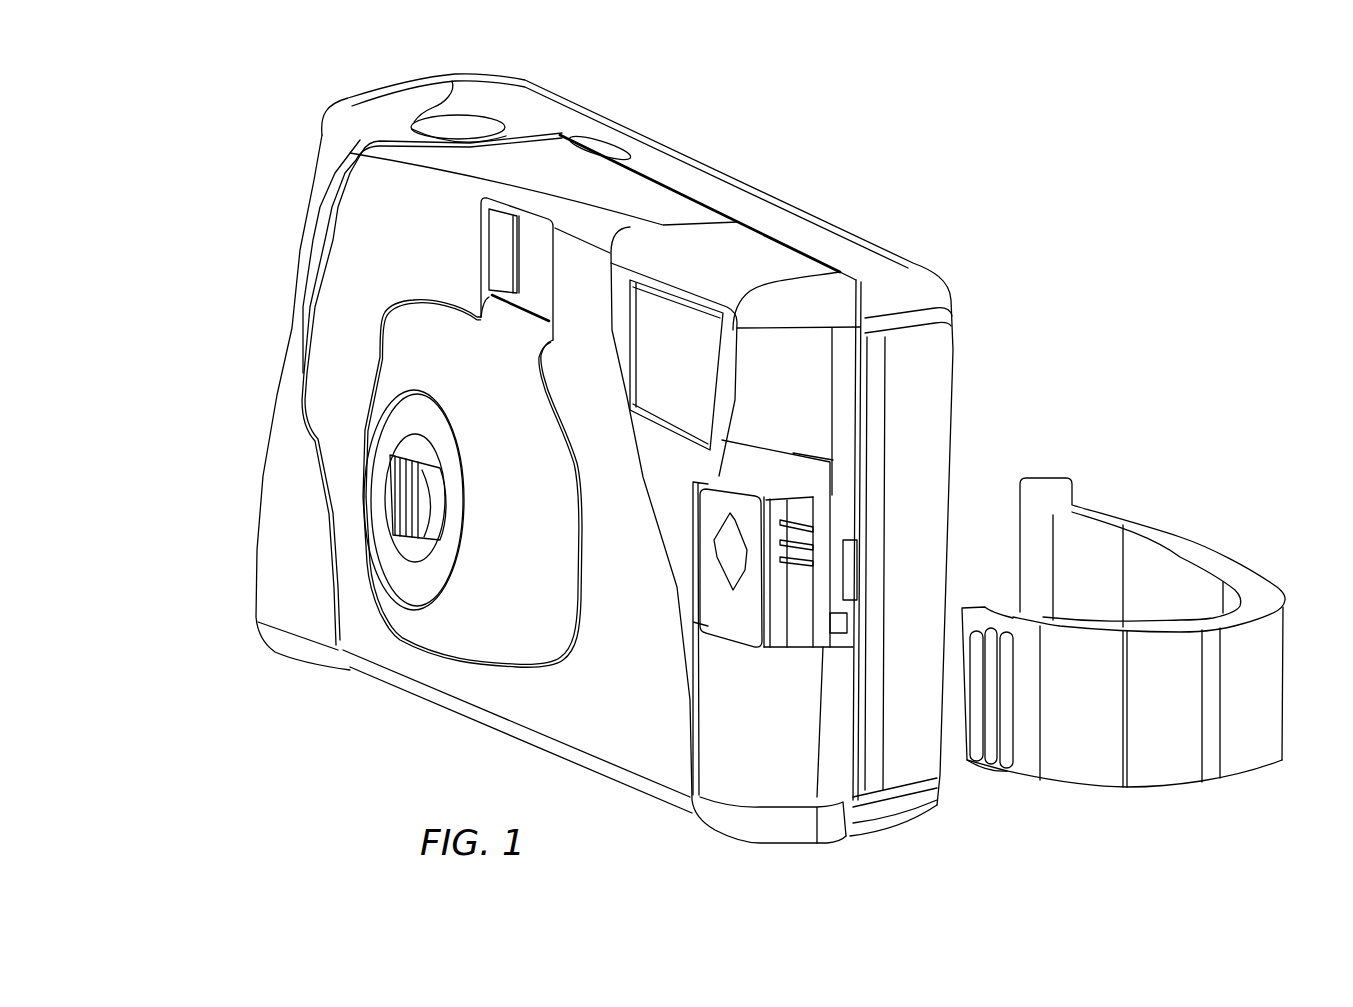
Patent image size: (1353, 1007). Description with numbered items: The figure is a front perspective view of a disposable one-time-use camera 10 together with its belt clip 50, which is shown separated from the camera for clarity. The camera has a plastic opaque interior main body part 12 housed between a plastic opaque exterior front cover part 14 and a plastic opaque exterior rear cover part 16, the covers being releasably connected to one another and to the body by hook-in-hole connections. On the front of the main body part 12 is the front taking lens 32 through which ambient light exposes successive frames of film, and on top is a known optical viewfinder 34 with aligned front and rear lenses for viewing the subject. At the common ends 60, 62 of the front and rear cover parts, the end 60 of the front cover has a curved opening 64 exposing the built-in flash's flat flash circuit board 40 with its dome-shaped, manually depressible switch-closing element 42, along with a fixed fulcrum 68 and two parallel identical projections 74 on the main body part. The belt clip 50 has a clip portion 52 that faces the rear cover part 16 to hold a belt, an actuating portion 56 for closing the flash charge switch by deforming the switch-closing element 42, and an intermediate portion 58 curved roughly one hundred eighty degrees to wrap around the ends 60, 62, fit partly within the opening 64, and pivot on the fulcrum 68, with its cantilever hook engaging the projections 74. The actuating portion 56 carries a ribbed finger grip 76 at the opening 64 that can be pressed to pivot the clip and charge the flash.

The disposable one-time-use camera 10 is at (298, 227).
The interior main body part 12 is at (318, 371).
The exterior front cover part 14 is at (808, 318).
The exterior rear cover part 16 is at (925, 277).
The front taking lens 32 is at (432, 499).
The optical viewfinder 34 is at (525, 252).
The flash circuit board 40 is at (730, 603).
The switch-closing element 42 is at (727, 553).
The belt clip 50 is at (1157, 662).
The clip portion 52 is at (1158, 534).
The actuating portion 56 is at (1005, 697).
The intermediate portion 58 is at (1240, 763).
The end of the front cover part 60 is at (768, 793).
The end of the rear cover part 62 is at (897, 773).
The curved opening 64 is at (707, 503).
The fixed fulcrum 68 is at (827, 570).
The projections 74 is at (810, 533).
The ribbed finger grip 76 is at (987, 730).